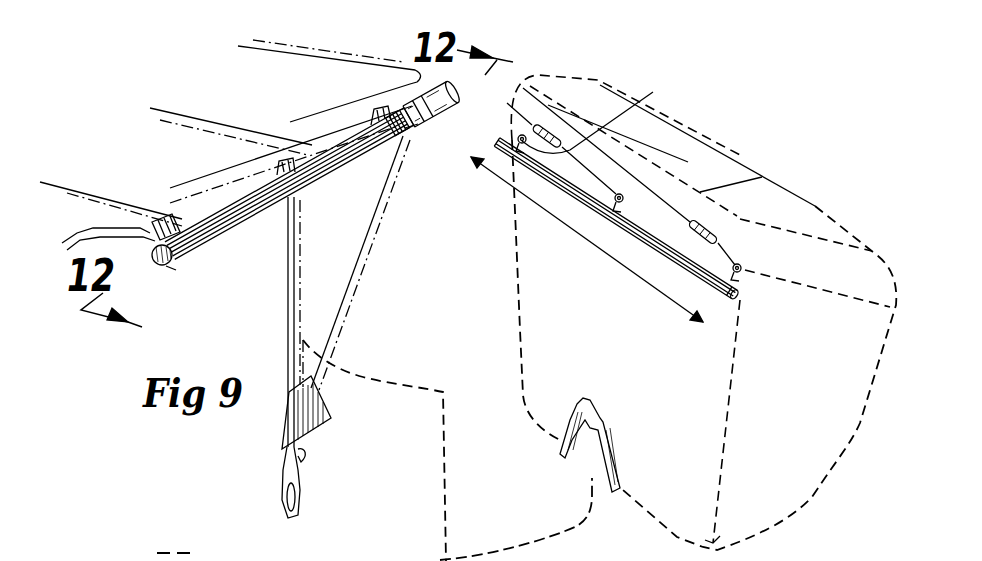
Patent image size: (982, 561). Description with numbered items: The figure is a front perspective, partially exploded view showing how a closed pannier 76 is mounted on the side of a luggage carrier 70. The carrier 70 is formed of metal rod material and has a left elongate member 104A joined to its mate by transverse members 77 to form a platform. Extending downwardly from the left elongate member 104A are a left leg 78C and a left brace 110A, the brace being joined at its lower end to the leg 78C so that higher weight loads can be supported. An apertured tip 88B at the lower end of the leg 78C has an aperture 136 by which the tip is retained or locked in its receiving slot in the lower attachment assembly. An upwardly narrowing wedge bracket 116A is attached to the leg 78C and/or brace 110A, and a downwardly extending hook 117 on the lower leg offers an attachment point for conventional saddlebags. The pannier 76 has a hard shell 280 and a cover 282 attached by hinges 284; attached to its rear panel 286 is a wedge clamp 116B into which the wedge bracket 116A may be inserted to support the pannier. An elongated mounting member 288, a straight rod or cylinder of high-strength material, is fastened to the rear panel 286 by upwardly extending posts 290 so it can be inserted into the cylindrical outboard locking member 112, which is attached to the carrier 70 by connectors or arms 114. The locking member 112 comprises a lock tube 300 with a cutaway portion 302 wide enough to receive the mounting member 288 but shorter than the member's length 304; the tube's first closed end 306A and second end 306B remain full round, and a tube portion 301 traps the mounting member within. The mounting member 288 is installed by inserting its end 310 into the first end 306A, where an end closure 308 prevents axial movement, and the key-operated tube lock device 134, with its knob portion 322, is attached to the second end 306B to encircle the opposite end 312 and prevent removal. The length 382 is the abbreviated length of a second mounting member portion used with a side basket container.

The luggage carrier 70 is at (345, 50).
The transverse members 77 is at (78, 191).
The left elongate member 104A is at (300, 143).
The connectors 114 is at (377, 117).
The knob portion 322 is at (456, 97).
The tube lock device 134 is at (438, 119).
The second end 306B is at (413, 128).
The tube portion 301 is at (157, 240).
The cutaway portion 302 is at (328, 160).
The lock tube 300 is at (209, 242).
The outboard locking member 112 is at (256, 221).
The end closure 308 is at (157, 265).
The first closed end 306A is at (177, 268).
The left brace 110A is at (348, 288).
The left leg 78C is at (287, 366).
The wedge bracket 116A is at (322, 411).
The hook 117 is at (307, 457).
The aperture 136 is at (297, 492).
The apertured tip 88B is at (297, 512).
The length 382 is at (290, 560).
The end 312 is at (518, 136).
The hinges 284 is at (560, 146).
The posts 290 is at (616, 194).
The pannier 76 is at (733, 155).
The mounting member 288 is at (756, 176).
The cover 282 is at (816, 208).
The length 304 is at (576, 235).
The end 310 is at (740, 299).
The rear panel 286 is at (530, 382).
The wedge clamp 116B is at (587, 460).
The hard shell 280 is at (843, 422).